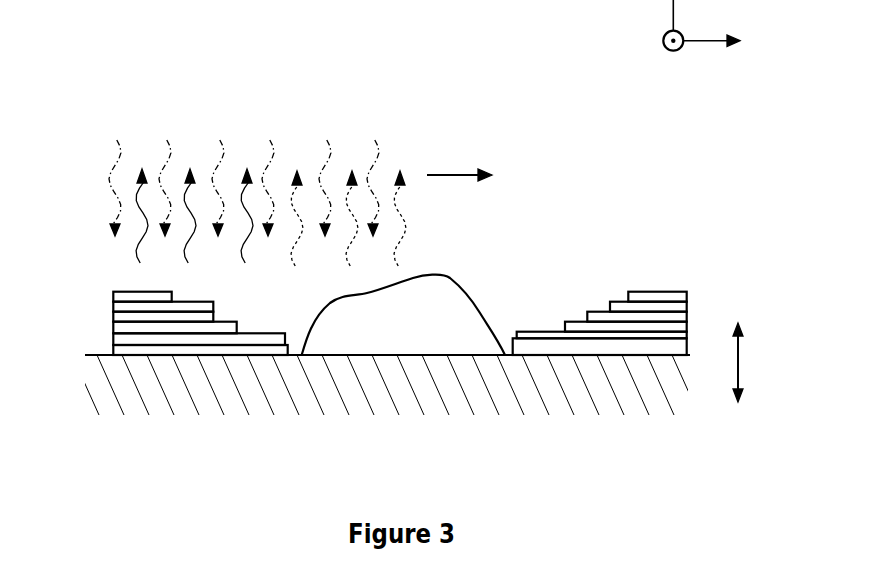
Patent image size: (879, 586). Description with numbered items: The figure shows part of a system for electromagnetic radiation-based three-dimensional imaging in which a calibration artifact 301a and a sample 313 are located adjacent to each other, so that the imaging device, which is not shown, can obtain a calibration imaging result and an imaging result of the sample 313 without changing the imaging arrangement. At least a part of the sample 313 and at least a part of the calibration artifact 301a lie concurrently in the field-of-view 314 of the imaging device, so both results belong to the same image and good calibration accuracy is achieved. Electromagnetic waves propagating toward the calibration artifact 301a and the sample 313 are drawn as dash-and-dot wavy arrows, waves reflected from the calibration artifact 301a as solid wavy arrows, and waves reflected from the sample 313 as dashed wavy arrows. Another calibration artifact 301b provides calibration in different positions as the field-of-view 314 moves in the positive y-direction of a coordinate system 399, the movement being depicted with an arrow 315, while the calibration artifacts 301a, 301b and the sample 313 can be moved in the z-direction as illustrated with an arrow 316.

The calibration artifact 301a is at (113, 335).
The another calibration artifact 301b is at (687, 318).
The sample 313 is at (421, 341).
The field-of-view 314 is at (408, 122).
The arrow 315 is at (453, 172).
The arrow 316 is at (738, 352).
The coordinate system 399 is at (730, 15).